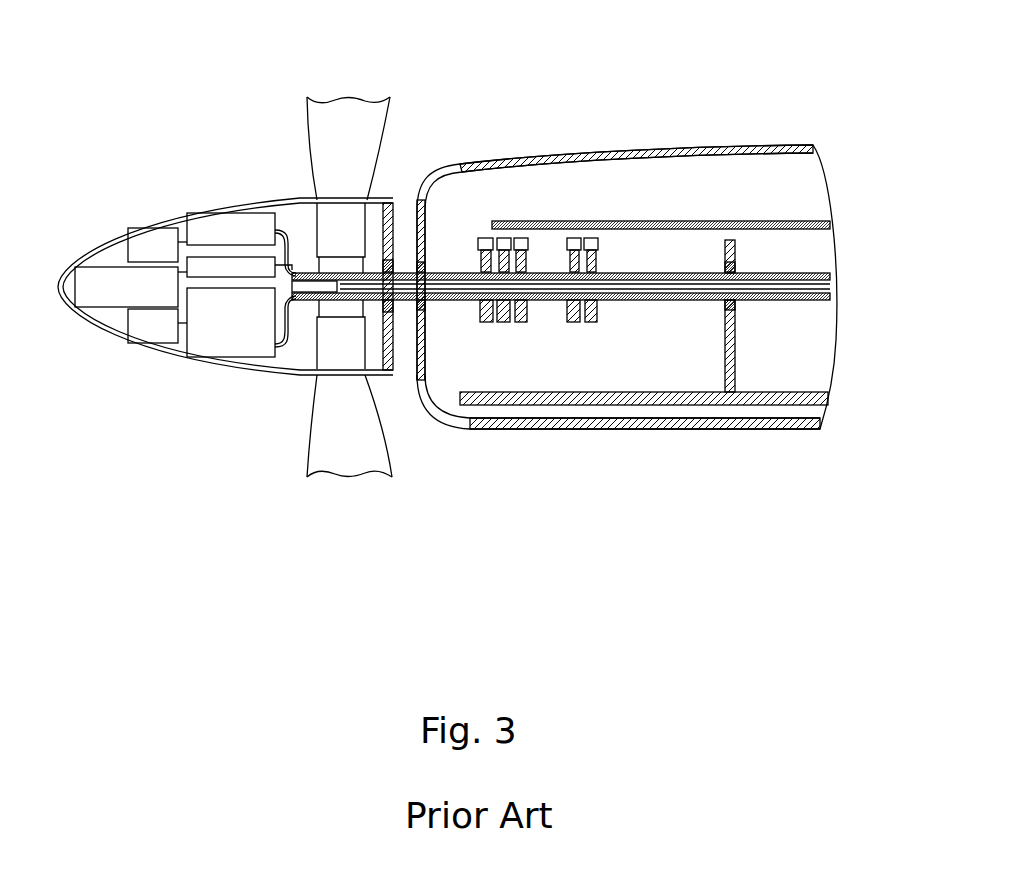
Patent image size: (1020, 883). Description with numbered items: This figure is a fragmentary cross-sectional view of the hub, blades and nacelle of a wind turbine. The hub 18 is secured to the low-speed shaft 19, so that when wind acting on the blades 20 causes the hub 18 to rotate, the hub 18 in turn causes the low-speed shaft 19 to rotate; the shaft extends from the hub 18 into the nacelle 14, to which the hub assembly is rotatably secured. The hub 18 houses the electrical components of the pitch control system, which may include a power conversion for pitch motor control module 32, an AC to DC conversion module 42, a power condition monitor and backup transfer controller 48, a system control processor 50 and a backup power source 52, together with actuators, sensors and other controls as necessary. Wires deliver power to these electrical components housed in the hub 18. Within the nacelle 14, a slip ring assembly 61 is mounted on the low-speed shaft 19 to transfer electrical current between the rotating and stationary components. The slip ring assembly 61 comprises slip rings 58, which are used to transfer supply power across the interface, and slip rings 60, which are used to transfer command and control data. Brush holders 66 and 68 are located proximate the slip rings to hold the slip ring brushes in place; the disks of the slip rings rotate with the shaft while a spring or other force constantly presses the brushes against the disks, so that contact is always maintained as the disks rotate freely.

The nacelle 14 is at (800, 427).
The hub 18 is at (180, 363).
The low-speed shaft 19 is at (667, 273).
The blades 20 is at (390, 112).
The power conversion for pitch motor control module 32 is at (147, 283).
The AC to DC conversion module 42 is at (225, 228).
The power condition monitor and backup transfer controller 48 is at (150, 237).
The system control processor 50 is at (250, 345).
The backup power source 52 is at (150, 328).
The slip rings 58 is at (522, 322).
The slip rings 60 is at (585, 322).
The slip ring assembly 61 is at (562, 363).
The brush holder 66 is at (485, 238).
The brush holder 68 is at (590, 238).